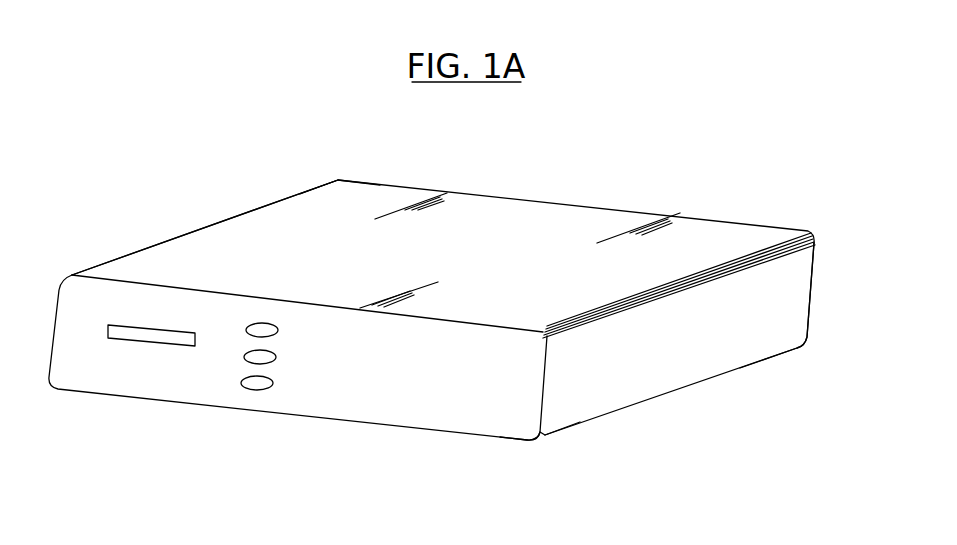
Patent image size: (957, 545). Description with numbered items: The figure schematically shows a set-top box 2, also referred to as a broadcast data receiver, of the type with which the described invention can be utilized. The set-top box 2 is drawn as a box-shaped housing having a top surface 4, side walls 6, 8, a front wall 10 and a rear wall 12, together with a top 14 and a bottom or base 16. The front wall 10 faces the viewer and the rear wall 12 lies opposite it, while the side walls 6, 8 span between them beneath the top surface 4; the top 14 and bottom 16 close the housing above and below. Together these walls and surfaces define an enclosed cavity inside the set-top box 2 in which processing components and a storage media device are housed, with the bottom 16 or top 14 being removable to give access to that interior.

The set-top box 2 is at (757, 327).
The top surface 4 is at (550, 228).
The side wall 6 is at (645, 366).
The side wall 8 is at (188, 232).
The front wall 10 is at (302, 382).
The rear wall 12 is at (816, 243).
The top 14 is at (341, 220).
The bottom or base 16 is at (570, 425).